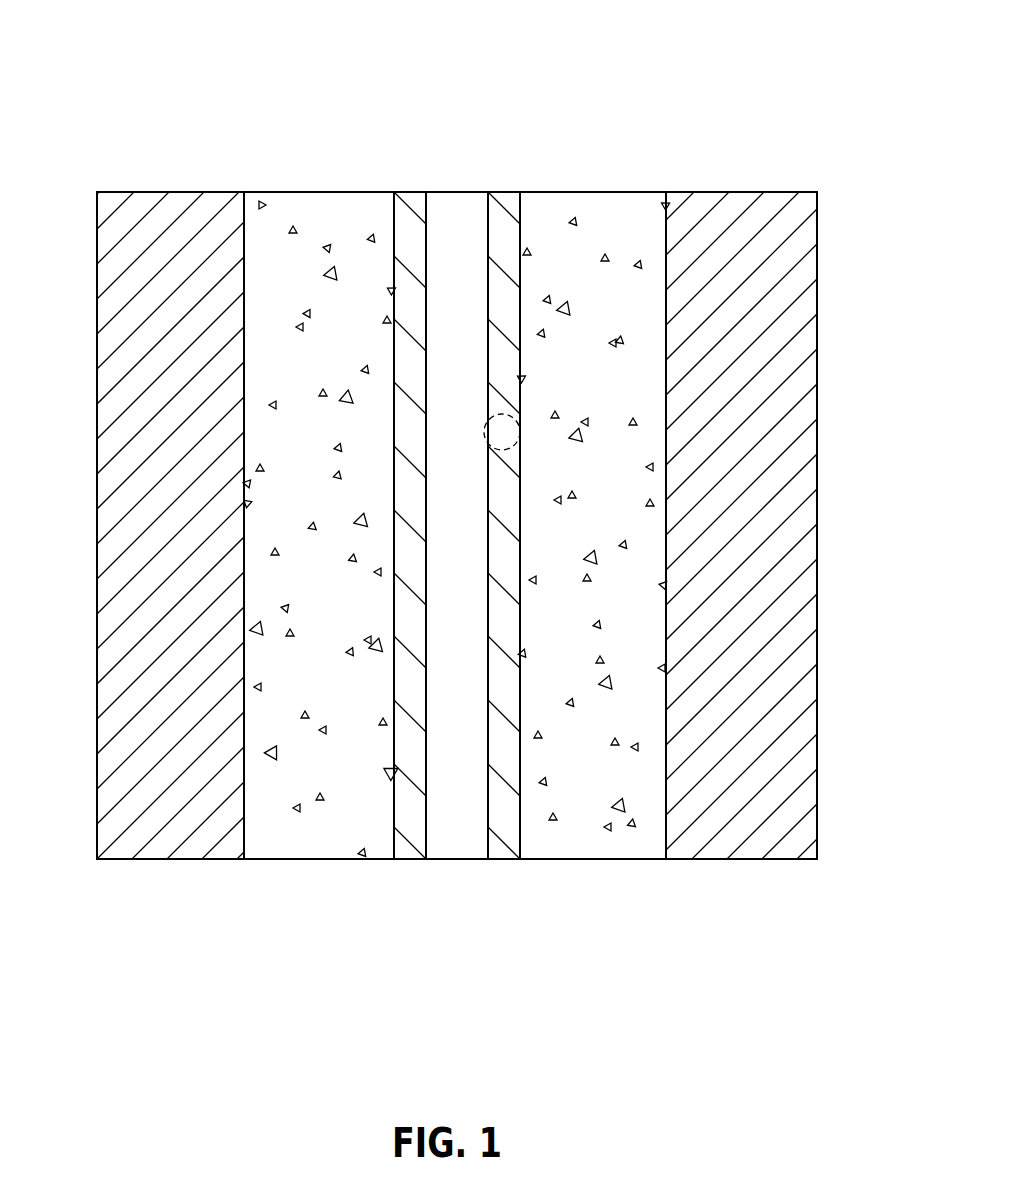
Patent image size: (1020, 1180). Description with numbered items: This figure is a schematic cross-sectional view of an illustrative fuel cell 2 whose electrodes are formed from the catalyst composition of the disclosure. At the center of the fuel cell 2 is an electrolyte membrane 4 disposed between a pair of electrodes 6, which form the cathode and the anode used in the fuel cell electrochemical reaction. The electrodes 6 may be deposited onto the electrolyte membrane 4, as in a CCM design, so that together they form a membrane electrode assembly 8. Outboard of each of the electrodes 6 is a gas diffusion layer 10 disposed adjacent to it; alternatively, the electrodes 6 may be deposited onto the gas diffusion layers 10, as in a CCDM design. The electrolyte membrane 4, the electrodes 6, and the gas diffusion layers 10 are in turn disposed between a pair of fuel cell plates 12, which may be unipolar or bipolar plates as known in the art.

The fuel cell 2 is at (124, 95).
The electrolyte membrane 4 is at (457, 192).
The electrodes 6 is at (408, 192).
The membrane electrode assembly 8 is at (455, 536).
The gas diffusion layer 10 is at (320, 192).
The fuel cell plates 12 is at (97, 300).